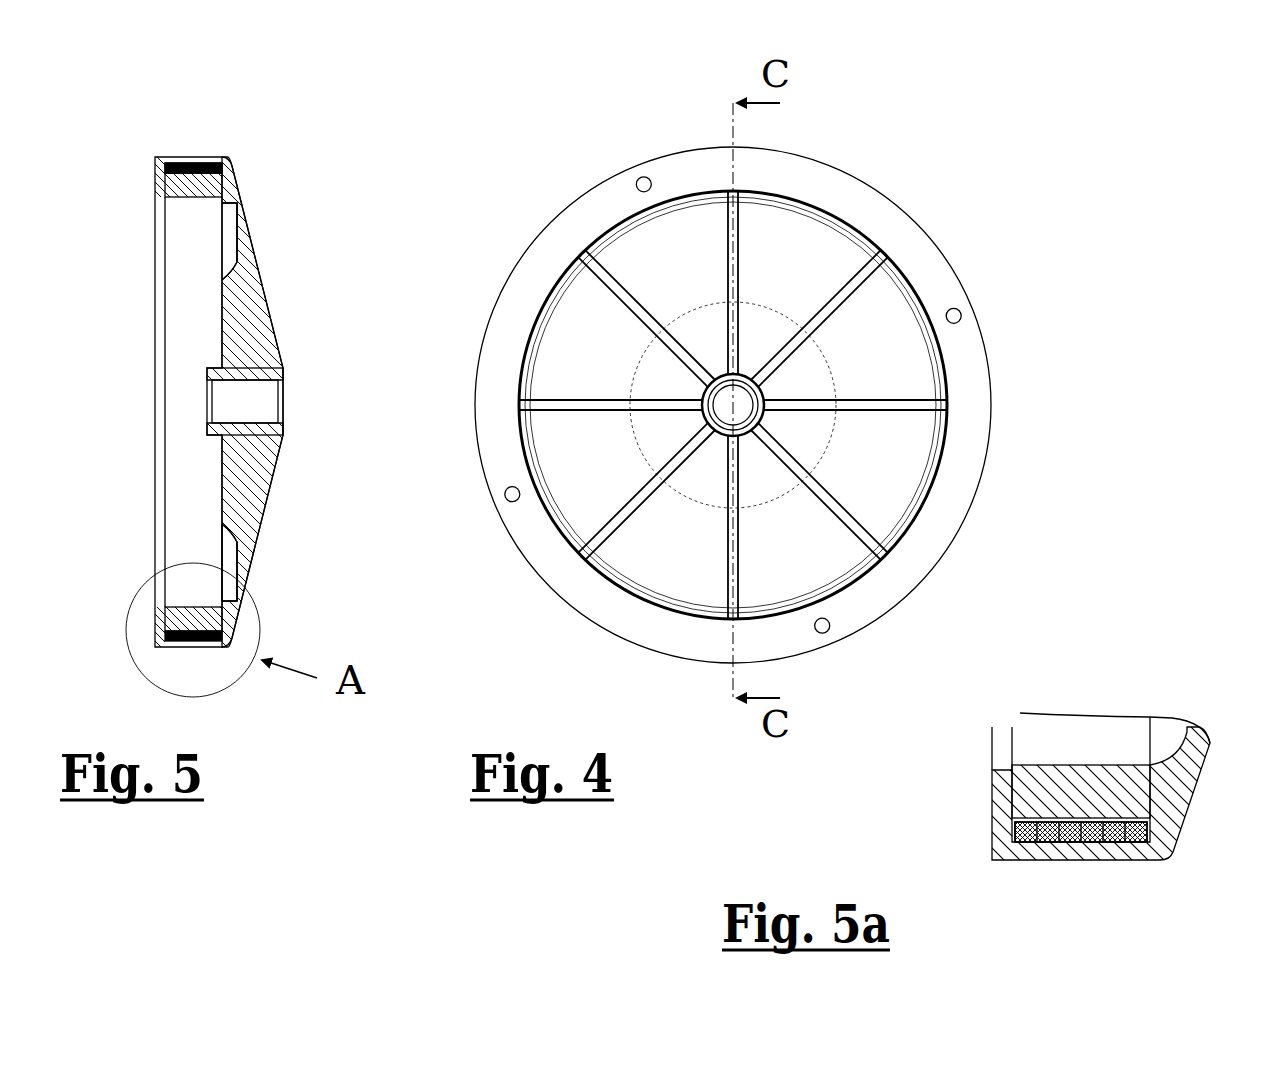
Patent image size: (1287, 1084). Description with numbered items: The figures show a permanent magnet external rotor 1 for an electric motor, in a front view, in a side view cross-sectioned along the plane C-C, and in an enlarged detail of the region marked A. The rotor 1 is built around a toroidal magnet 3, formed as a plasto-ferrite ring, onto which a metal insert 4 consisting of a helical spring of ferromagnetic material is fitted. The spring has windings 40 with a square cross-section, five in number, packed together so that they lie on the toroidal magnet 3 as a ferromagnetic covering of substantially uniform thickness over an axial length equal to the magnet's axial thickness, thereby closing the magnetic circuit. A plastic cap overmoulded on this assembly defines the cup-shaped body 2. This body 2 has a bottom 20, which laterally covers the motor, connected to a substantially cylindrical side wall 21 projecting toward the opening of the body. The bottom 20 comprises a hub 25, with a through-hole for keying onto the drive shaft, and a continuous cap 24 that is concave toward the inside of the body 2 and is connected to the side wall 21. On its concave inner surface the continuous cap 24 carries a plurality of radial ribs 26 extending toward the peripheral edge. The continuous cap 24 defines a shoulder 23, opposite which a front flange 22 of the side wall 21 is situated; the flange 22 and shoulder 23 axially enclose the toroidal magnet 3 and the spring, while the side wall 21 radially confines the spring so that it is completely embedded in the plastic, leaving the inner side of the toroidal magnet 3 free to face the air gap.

In FIG. 5, the external rotor 1 is at (254, 158).
In FIG. 4, the external rotor 1 is at (941, 196).
In FIG. 5, the cup-shaped body 2 is at (260, 350).
In FIG. 4, the cup-shaped body 2 is at (963, 355).
In FIG. 5, the toroidal magnet 3 is at (185, 185).
In FIG. 5A, the toroidal magnet 3 is at (1070, 785).
In FIG. 5, the metal insert 4 is at (160, 167).
In FIG. 5A, the metal insert 4 is at (1113, 843).
In FIG. 5, the bottom 20 is at (257, 535).
In FIG. 4, the bottom 20 is at (688, 245).
In FIG. 5, the side wall 21 is at (172, 157).
In FIG. 5A, the side wall 21 is at (1077, 847).
In FIG. 4, the front flange 22 is at (593, 207).
In FIG. 5A, the front flange 22 is at (998, 803).
In FIG. 5A, the shoulder 23 is at (1150, 797).
In FIG. 5, the continuous cap 24 is at (253, 270).
In FIG. 5, the hub 25 is at (260, 445).
In FIG. 4, the radial ribs 26 is at (740, 587).
In FIG. 5A, the windings 40 is at (1137, 843).